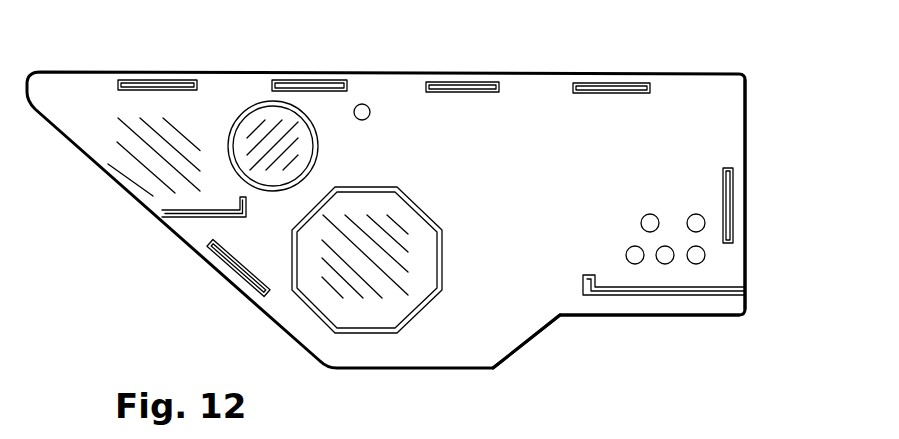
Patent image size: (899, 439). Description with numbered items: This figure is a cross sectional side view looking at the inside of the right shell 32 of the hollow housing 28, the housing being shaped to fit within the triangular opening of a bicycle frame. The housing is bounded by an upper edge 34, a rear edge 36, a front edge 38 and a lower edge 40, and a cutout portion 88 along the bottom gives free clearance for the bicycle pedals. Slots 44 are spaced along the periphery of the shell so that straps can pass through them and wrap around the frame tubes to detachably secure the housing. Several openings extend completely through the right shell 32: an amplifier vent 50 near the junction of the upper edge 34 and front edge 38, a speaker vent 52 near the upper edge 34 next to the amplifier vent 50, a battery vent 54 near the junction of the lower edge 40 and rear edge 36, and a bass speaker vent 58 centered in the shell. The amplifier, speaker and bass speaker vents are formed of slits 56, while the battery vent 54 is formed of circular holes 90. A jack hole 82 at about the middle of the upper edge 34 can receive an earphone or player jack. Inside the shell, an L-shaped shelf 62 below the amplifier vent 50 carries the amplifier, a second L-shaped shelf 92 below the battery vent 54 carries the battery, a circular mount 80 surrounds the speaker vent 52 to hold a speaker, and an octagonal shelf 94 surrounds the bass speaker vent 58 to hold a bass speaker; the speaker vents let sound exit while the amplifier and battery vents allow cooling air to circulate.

The hollow housing 28 is at (545, 105).
The right shell 32 is at (502, 188).
The upper edge 34 is at (425, 72).
The rear edge 36 is at (745, 137).
The front edge 38 is at (207, 253).
The lower edge 40 is at (522, 345).
The slots 44 is at (482, 89).
The amplifier vent 50 is at (148, 143).
The speaker vent 52 is at (273, 142).
The battery vent 54 is at (680, 239).
The slits 56 is at (345, 241).
The bass speaker vent 58 is at (300, 337).
The L-shaped shelf 62 is at (183, 215).
The circular mount 80 is at (245, 108).
The jack hole 82 is at (365, 104).
The cutout portion 88 is at (642, 318).
The circular holes 90 is at (700, 222).
The second L-shaped shelf 92 is at (698, 290).
The octagonal shelf 94 is at (356, 333).